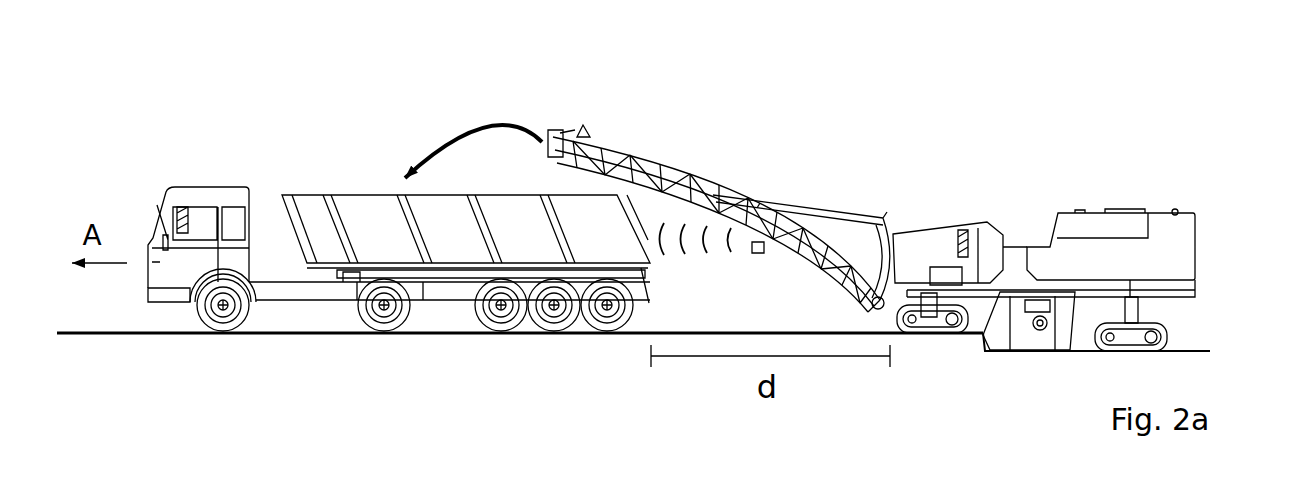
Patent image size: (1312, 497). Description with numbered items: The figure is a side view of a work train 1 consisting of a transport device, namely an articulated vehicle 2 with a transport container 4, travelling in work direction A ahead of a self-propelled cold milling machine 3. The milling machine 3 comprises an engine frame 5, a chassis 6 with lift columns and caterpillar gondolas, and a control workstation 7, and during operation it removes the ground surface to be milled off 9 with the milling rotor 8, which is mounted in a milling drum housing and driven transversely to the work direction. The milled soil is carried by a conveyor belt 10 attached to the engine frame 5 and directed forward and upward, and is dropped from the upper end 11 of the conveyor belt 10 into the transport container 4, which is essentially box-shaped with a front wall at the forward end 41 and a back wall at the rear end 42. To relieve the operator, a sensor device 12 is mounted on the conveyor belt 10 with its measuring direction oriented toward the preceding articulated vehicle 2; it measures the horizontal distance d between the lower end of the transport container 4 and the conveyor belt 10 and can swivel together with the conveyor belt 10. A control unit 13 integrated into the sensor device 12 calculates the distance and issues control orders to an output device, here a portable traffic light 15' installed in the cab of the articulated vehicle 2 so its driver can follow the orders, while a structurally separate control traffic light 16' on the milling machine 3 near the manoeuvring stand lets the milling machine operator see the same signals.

The work train 1 is at (153, 170).
The articulated vehicle 2 is at (310, 147).
The transport container 4 is at (365, 213).
The forward end 41 is at (285, 227).
The traffic light 15' is at (190, 147).
The ground surface to be milled off 9 is at (187, 335).
The conveyor belt 10 is at (617, 140).
The upper end 11 is at (550, 136).
The sensor device 12 is at (788, 208).
The control unit 13 is at (753, 256).
The rear end 42 is at (676, 264).
The milling machine 3 is at (1110, 194).
The engine frame 5 is at (1200, 256).
The chassis 6 is at (1135, 306).
The control workstation 7 is at (1029, 224).
The control traffic light 16' is at (963, 172).
The milling rotor 8 is at (1013, 337).